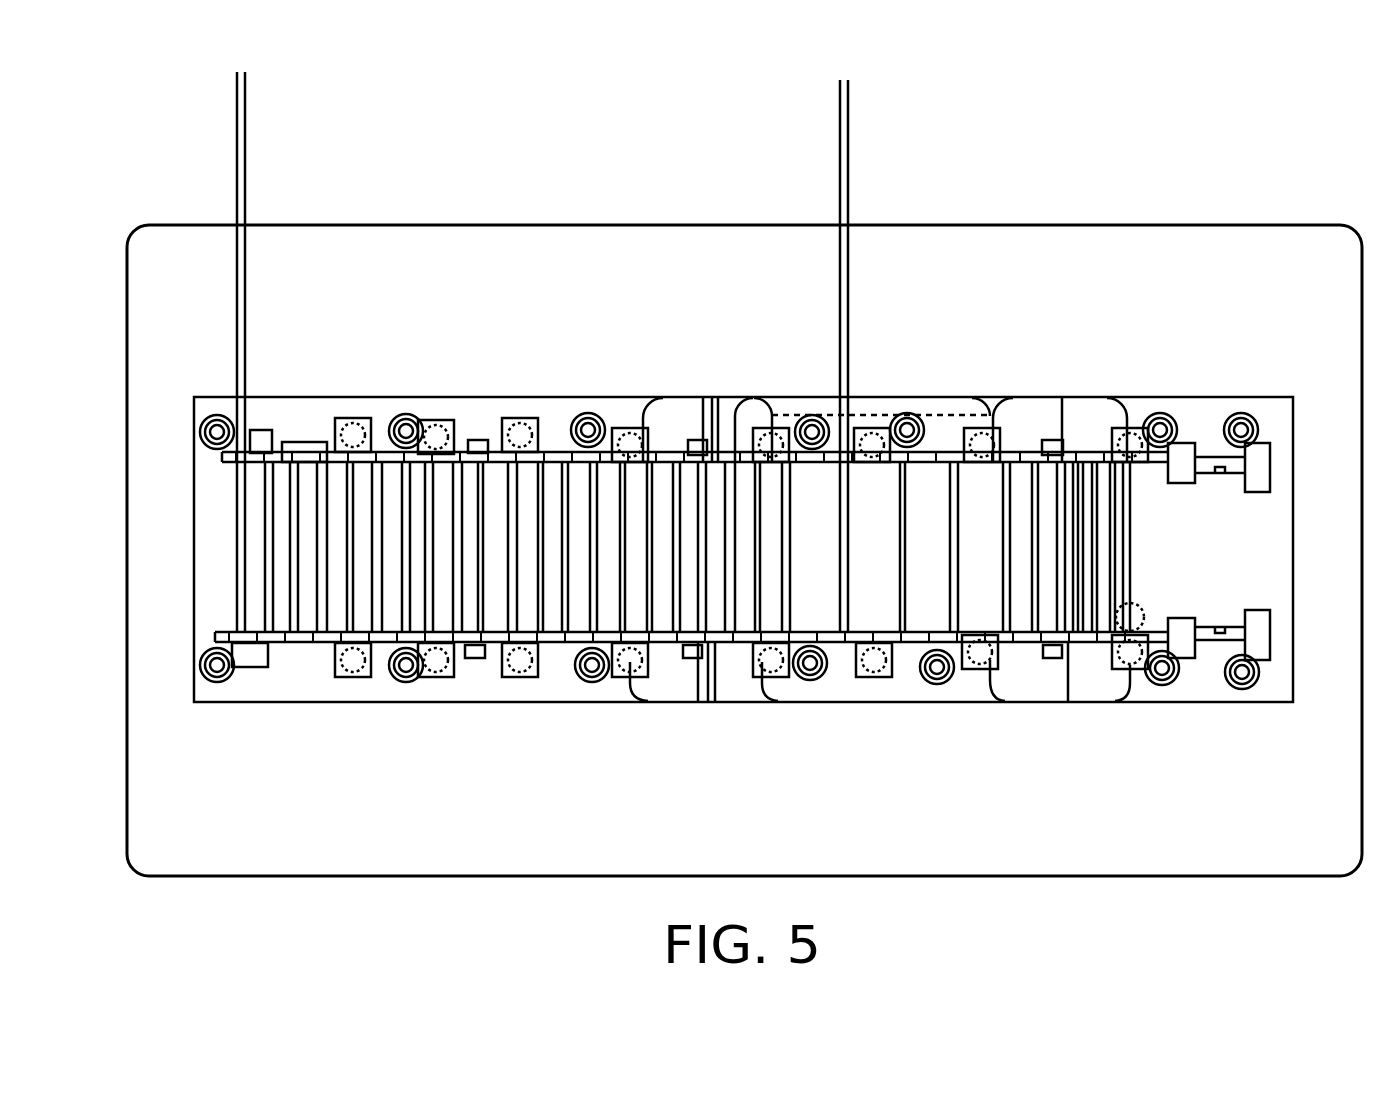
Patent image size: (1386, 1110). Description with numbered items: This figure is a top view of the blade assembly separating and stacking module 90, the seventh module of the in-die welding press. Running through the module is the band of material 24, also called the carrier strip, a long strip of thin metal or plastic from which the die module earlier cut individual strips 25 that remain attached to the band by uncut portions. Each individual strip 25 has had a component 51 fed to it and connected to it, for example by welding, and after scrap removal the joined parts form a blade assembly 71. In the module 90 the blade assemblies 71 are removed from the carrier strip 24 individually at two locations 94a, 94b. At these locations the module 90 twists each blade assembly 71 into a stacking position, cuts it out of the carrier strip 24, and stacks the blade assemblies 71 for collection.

The blade assembly separating and stacking module 90 is at (1148, 165).
The blade assembly 71 is at (312, 97).
The component 51 is at (234, 515).
The band of material 24 is at (327, 460).
The individual strip 25 is at (342, 418).
The location 94a is at (668, 688).
The location 94b is at (1033, 680).